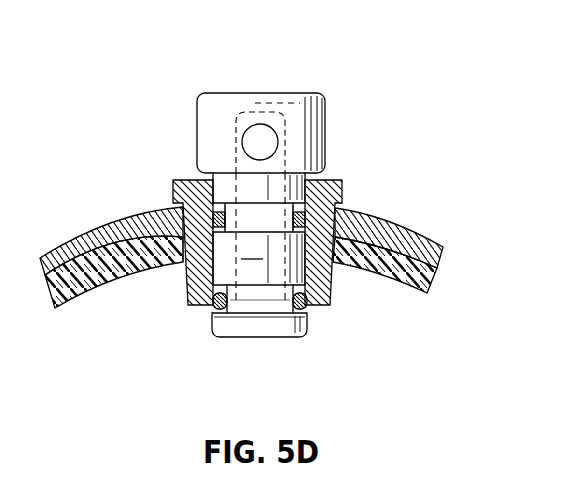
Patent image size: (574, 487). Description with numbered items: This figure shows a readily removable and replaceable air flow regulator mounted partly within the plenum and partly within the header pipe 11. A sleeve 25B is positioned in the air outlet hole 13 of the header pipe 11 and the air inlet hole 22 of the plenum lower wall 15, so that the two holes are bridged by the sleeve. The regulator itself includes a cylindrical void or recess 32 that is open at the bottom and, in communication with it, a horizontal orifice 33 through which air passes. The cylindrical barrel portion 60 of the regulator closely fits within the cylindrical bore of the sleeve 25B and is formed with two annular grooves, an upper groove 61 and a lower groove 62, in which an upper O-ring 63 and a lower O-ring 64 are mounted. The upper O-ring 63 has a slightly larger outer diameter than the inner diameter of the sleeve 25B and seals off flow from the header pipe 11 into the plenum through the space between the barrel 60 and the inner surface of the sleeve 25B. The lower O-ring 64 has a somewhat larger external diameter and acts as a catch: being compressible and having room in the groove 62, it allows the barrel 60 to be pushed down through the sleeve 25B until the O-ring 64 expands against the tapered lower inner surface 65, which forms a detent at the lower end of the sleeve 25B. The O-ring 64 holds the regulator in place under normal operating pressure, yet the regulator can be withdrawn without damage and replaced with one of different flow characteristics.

The header pipe 11 is at (78, 299).
The air outlet hole 13 is at (177, 262).
The plenum lower wall 15 is at (76, 265).
The air inlet hole 22 is at (160, 221).
The sleeve 25B is at (315, 222).
The cylindrical void or recess 32 is at (277, 340).
The horizontal orifice 33 is at (255, 123).
The cylindrical barrel portion 60 is at (261, 203).
The upper groove 61 is at (262, 215).
The lower groove 62 is at (246, 302).
The upper O-ring 63 is at (340, 229).
The lower O-ring 64 is at (214, 305).
The tapered lower inner surface 65 is at (306, 312).